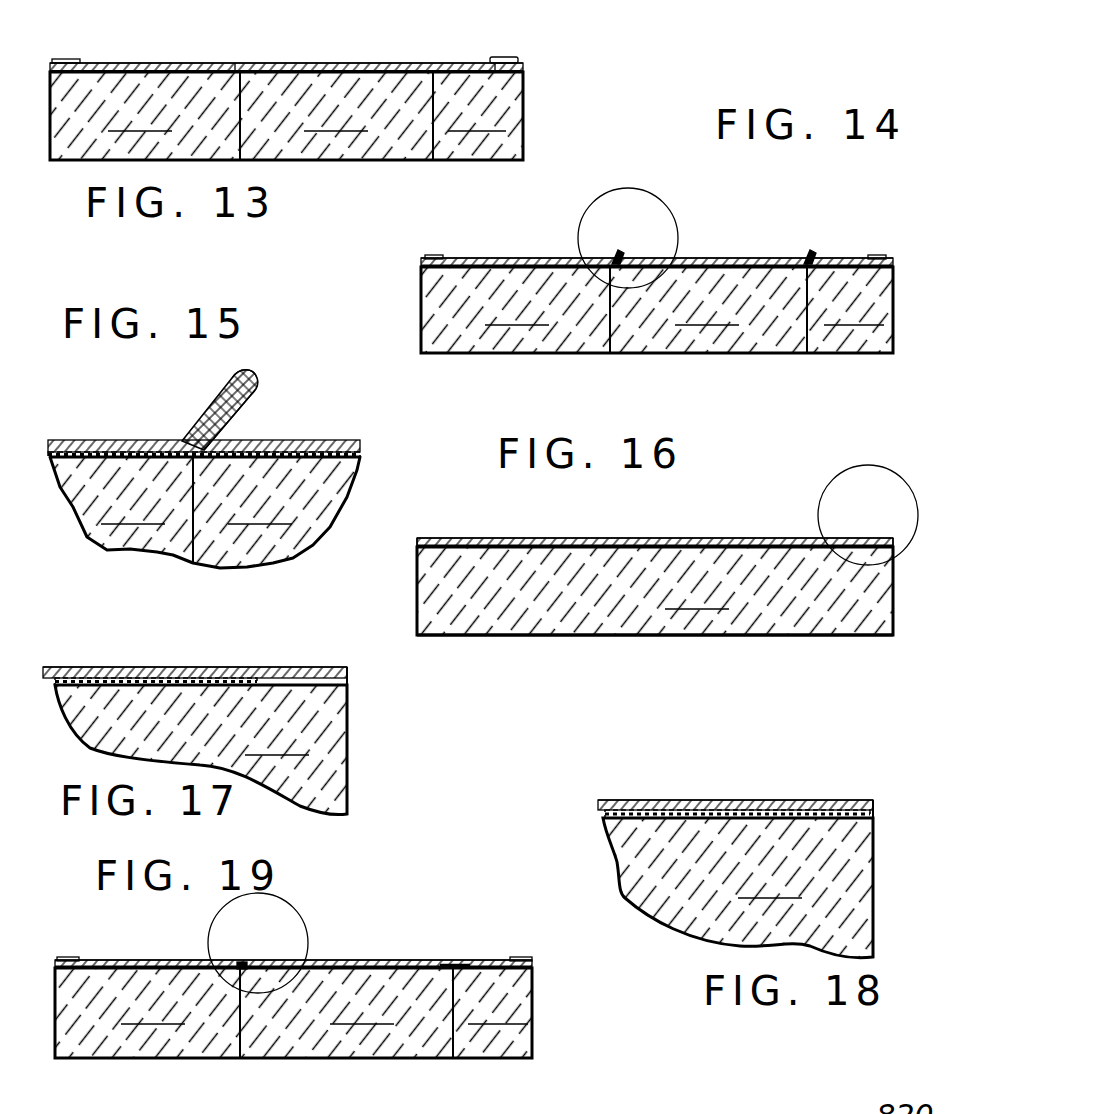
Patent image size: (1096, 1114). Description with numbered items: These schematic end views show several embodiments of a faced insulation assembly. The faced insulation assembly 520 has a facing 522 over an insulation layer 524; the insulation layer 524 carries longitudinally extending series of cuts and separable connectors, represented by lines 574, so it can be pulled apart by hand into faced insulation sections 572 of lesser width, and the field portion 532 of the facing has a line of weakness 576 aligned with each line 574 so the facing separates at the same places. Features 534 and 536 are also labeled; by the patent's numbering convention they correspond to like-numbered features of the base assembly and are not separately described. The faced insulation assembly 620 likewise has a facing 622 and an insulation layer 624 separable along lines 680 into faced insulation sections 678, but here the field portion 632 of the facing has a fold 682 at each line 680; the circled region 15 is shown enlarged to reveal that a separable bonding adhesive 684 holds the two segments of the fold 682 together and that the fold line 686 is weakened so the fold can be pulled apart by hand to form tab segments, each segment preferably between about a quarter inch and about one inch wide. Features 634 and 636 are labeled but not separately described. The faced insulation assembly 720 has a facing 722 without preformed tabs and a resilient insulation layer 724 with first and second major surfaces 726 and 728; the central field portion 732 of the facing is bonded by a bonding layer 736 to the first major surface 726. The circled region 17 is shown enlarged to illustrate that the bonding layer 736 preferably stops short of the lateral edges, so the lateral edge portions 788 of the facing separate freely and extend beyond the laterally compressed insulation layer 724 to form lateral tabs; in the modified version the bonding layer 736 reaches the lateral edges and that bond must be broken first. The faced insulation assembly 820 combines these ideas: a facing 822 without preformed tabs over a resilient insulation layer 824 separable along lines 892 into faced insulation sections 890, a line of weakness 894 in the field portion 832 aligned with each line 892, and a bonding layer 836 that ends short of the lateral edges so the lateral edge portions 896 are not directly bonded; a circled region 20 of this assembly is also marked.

In FIG. 13, the faced insulation assembly 520 is at (430, 50).
In FIG. 13, the facing 522 is at (258, 61).
In FIG. 13, the insulation layer 524 is at (481, 148).
In FIG. 13, the field portion 532 is at (310, 63).
In FIG. 13, the end tab 534 is at (60, 62).
In FIG. 13, the adhesive layer 536 is at (337, 72).
In FIG. 13, the faced insulation sections 572 is at (307, 116).
In FIG. 13, the lines representing series of cuts and separable connectors 574 is at (245, 148).
In FIG. 13, the line of weakness 576 is at (238, 63).
In FIG. 14, the faced insulation assembly 620 is at (683, 207).
In FIG. 14, the facing 622 is at (724, 256).
In FIG. 14, the insulation layer 624 is at (848, 357).
In FIG. 14, the field portion 632 is at (466, 262).
In FIG. 15, the field portion 632 is at (118, 440).
In FIG. 14, the end tab 634 is at (878, 256).
In FIG. 14, the adhesive layer 636 is at (444, 286).
In FIG. 15, the adhesive layer 636 is at (360, 456).
In FIG. 14, the faced insulation sections 678 is at (684, 310).
In FIG. 15, the faced insulation sections 678 is at (205, 512).
In FIG. 14, the lines representing series of cuts and separable connectors 680 is at (614, 336).
In FIG. 15, the lines representing series of cuts and separable connectors 680 is at (190, 542).
In FIG. 14, the fold 682 is at (810, 252).
In FIG. 15, the fold 682 is at (206, 412).
In FIG. 15, the separable bonding adhesive 684 is at (250, 412).
In FIG. 15, the fold line 686 is at (262, 380).
In FIG. 14, the detail view circle 15 is at (591, 198).
In FIG. 16, the faced insulation assembly 720 is at (800, 490).
In FIG. 17, the faced insulation assembly 720 is at (302, 634).
In FIG. 18, the faced insulation assembly 720 is at (824, 762).
In FIG. 16, the facing 722 is at (713, 536).
In FIG. 17, the facing 722 is at (230, 664).
In FIG. 18, the facing 722 is at (642, 796).
In FIG. 16, the insulation layer 724 is at (655, 591).
In FIG. 17, the insulation layer 724 is at (201, 750).
In FIG. 18, the insulation layer 724 is at (738, 888).
In FIG. 16, the first major surface 726 is at (592, 548).
In FIG. 17, the first major surface 726 is at (104, 687).
In FIG. 18, the first major surface 726 is at (640, 816).
In FIG. 16, the second major surface 728 is at (597, 637).
In FIG. 16, the central field portion 732 is at (515, 538).
In FIG. 17, the central field portion 732 is at (72, 668).
In FIG. 18, the central field portion 732 is at (712, 800).
In FIG. 16, the bonding layer 736 is at (656, 540).
In FIG. 17, the bonding layer 736 is at (120, 668).
In FIG. 18, the bonding layer 736 is at (872, 844).
In FIG. 16, the lateral edge portions 788 is at (421, 537).
In FIG. 17, the lateral edge portions 788 is at (348, 664).
In FIG. 18, the lateral edge portions 788 is at (848, 800).
In FIG. 16, the detail view circle 17 is at (889, 469).
In FIG. 19, the faced insulation assembly 820 is at (452, 892).
In FIG. 19, the facing 822 is at (357, 956).
In FIG. 19, the insulation layer 824 is at (533, 1040).
In FIG. 19, the field portion 832 is at (330, 960).
In FIG. 19, the bonding layer 836 is at (180, 960).
In FIG. 19, the faced insulation sections 890 is at (324, 1008).
In FIG. 19, the lines representing series of cuts and separable connectors 892 is at (243, 1050).
In FIG. 19, the line of weakness 894 is at (241, 962).
In FIG. 19, the lateral edge portions 896 is at (60, 959).
In FIG. 19, the faced insulation assembly 20 is at (223, 908).